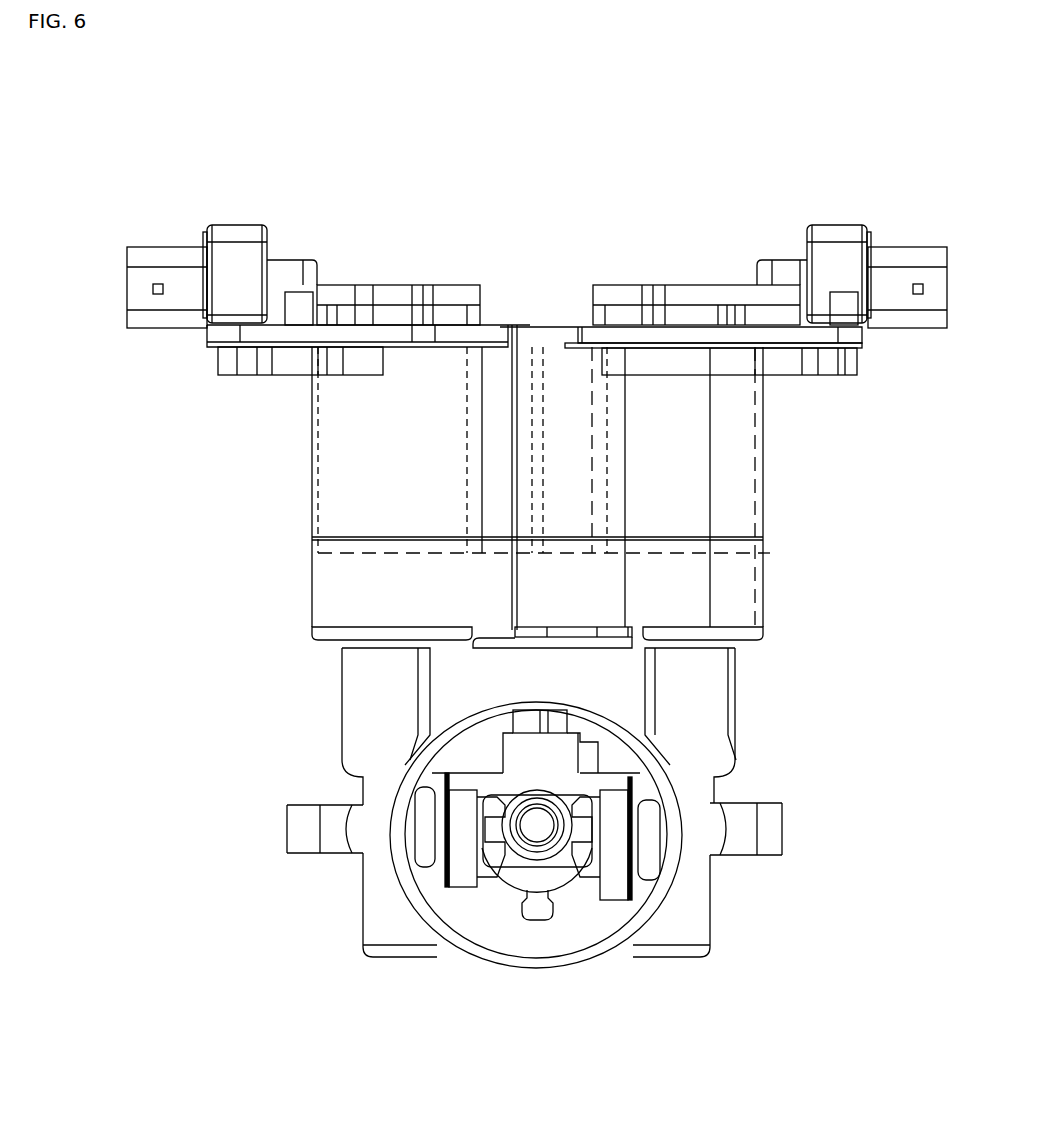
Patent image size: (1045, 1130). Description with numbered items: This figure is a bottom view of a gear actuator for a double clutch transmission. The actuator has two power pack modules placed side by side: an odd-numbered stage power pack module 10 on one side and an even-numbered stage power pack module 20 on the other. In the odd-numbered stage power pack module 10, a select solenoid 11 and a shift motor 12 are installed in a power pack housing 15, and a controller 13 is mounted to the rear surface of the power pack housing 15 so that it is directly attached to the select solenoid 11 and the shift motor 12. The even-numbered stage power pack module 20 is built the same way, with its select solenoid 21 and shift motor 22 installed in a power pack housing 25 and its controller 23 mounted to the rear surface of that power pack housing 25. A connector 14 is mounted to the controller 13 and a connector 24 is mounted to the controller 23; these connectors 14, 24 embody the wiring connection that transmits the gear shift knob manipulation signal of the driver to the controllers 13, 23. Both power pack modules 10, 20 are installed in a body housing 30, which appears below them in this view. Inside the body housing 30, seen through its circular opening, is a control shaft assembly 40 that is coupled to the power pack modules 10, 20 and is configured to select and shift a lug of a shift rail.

The odd-numbered stage power pack module 10 is at (711, 215).
The select solenoid 11 is at (705, 535).
The shift motor 12 is at (757, 412).
The controller 13 is at (683, 290).
The connector 14 is at (905, 250).
The power pack housing 15 is at (763, 495).
The even-numbered stage power pack module 20 is at (318, 237).
The select solenoid 21 is at (470, 508).
The shift motor 22 is at (313, 410).
The controller 23 is at (395, 290).
The connector 24 is at (165, 255).
The power pack housing 25 is at (313, 475).
The body housing 30 is at (713, 702).
The control shaft assembly 40 is at (568, 895).